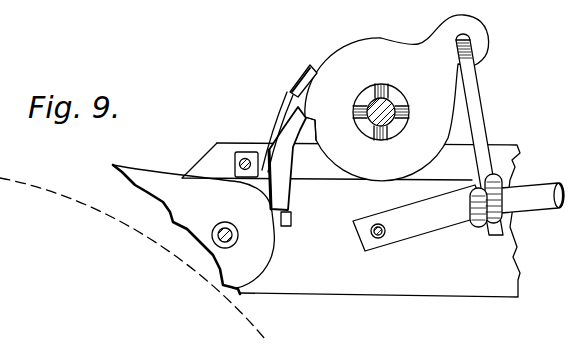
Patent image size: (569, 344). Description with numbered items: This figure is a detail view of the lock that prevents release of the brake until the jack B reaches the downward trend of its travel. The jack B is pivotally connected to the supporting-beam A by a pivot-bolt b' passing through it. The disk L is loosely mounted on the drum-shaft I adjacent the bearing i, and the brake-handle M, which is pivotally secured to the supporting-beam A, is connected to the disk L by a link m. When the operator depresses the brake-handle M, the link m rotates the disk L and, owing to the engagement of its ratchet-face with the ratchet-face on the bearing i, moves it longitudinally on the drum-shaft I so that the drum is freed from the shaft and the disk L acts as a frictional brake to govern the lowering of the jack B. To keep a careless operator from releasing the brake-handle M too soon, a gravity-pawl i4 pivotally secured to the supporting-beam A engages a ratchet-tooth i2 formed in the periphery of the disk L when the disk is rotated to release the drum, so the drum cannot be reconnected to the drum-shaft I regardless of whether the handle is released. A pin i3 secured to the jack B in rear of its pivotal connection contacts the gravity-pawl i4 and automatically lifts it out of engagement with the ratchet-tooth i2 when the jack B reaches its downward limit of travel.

The supporting-beam A is at (351, 220).
The jack B is at (193, 229).
The pivot-bolt b' is at (217, 229).
The disk L is at (422, 165).
The drum-shaft I is at (381, 103).
The bearing i is at (398, 128).
The ratchet-tooth i2 is at (320, 126).
The pin i3 is at (283, 184).
The gravity-pawl i4 is at (283, 103).
The link m is at (487, 133).
The brake-handle M is at (420, 218).